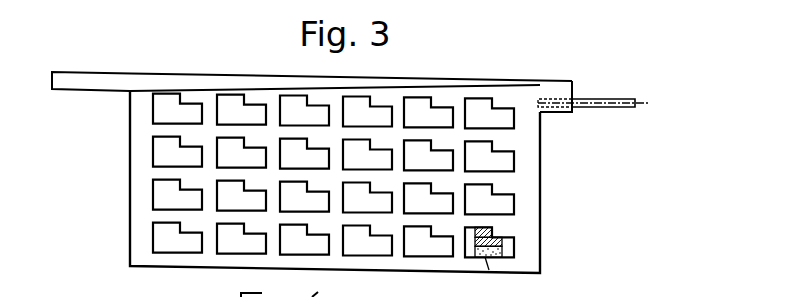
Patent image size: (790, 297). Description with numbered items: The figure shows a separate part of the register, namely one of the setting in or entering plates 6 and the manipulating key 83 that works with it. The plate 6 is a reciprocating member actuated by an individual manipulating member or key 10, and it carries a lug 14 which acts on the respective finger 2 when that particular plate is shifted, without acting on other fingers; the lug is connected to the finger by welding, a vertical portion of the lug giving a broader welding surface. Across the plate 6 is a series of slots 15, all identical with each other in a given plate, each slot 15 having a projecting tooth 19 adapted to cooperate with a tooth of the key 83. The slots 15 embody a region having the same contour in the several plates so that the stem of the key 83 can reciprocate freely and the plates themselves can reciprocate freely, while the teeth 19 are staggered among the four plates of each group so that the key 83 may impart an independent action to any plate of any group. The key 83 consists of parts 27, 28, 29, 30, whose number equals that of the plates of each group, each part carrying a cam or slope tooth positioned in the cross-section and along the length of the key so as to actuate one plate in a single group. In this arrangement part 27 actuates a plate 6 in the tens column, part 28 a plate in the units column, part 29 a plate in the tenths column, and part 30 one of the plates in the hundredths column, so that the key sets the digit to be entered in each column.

The key 10 is at (92, 80).
The plate 6 is at (206, 87).
The lug 14 is at (561, 91).
The finger 2 is at (616, 104).
The slot 15 is at (360, 154).
The projecting tooth 19 is at (497, 101).
The part of key 27 is at (492, 231).
The part of key 28 is at (498, 242).
The part of key 29 is at (500, 248).
The part of key 30 is at (531, 275).
The manipulating key 83 is at (541, 243).